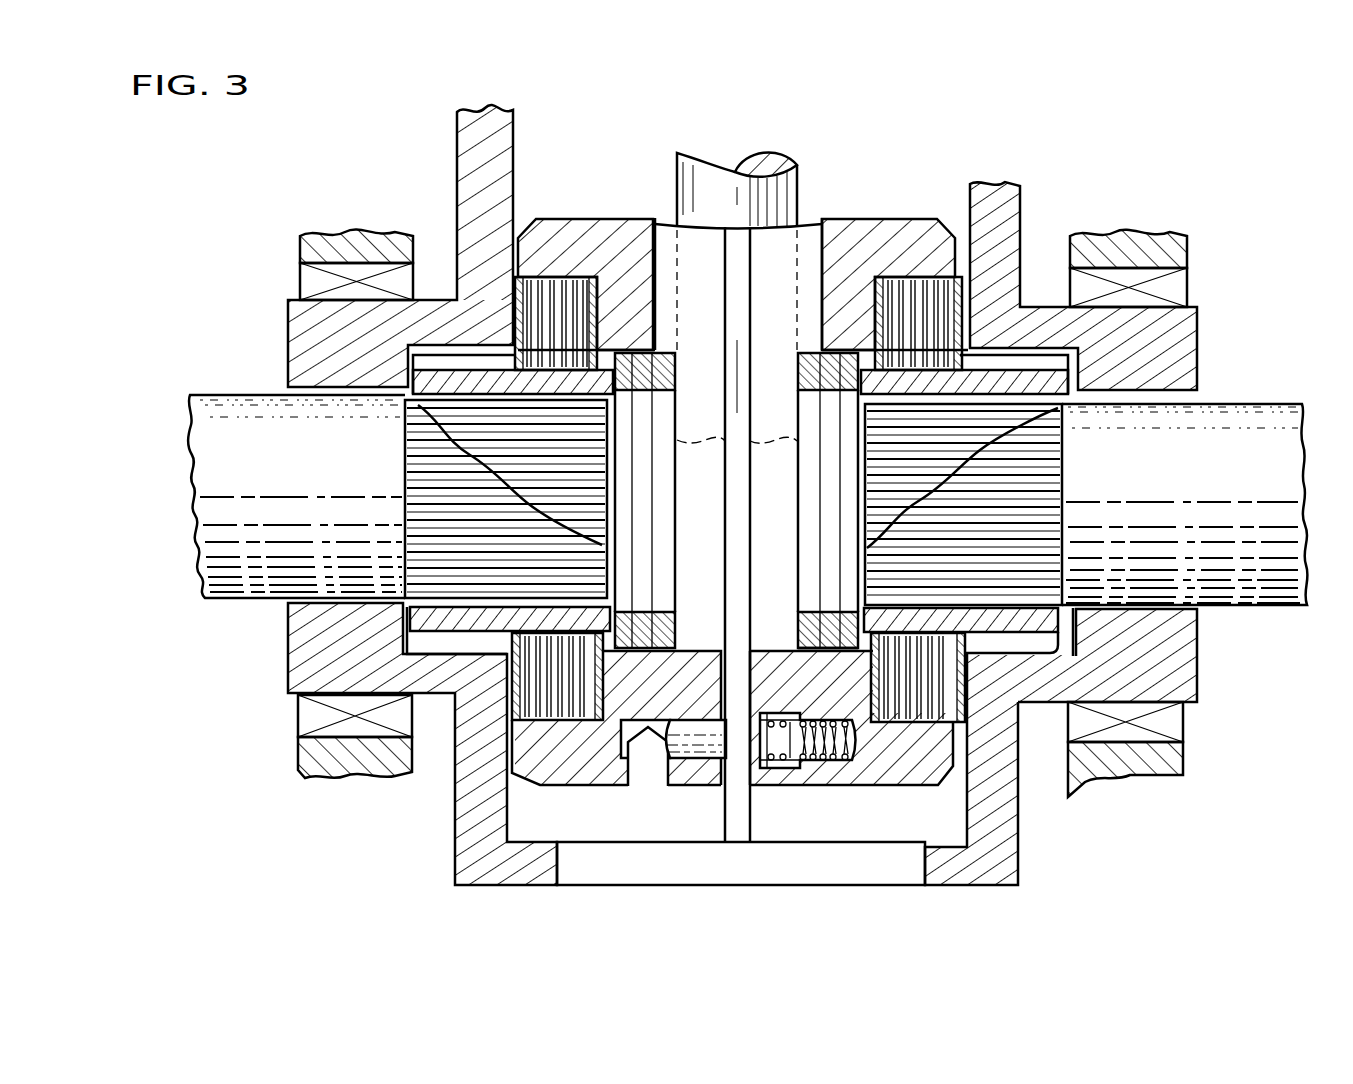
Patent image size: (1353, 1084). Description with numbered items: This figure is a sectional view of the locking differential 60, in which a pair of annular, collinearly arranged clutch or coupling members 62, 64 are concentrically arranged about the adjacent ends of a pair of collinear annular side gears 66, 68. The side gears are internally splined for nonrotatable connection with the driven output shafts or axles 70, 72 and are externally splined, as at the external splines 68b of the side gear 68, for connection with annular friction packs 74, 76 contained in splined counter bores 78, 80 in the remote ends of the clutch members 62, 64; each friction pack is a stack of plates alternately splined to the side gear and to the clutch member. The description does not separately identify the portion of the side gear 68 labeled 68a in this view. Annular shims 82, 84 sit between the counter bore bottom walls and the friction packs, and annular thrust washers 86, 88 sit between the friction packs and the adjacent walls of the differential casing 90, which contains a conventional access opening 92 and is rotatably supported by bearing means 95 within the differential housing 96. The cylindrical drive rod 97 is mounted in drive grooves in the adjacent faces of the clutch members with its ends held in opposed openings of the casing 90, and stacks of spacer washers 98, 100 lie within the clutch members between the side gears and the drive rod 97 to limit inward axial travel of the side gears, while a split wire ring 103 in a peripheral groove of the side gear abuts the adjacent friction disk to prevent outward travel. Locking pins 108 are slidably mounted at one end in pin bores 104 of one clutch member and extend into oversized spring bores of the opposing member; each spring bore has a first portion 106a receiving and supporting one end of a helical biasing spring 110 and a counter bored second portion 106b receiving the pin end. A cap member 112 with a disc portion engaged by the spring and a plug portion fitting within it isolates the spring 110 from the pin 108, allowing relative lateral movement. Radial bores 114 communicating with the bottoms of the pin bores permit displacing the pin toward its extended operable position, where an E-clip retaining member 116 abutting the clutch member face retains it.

The locking differential 60 is at (826, 218).
The clutch member 62 is at (588, 236).
The clutch member 64 is at (862, 218).
The side gear 66 is at (402, 628).
The side gear 68 is at (1072, 629).
The hub flange 68a is at (1027, 590).
The external splines 68b is at (1085, 354).
The driven output shaft 70 is at (272, 572).
The driven output shaft 72 is at (1236, 585).
The friction pack 74 is at (522, 277).
The friction pack 76 is at (913, 284).
The splined counter bore 78 is at (537, 703).
The splined counter bore 80 is at (967, 712).
The annular shim 82 is at (590, 785).
The annular shim 84 is at (865, 652).
The annular thrust washer 86 is at (505, 300).
The annular thrust washer 88 is at (1020, 297).
The differential casing 90 is at (455, 876).
The access opening 92 is at (620, 858).
The bearing means 95 is at (302, 718).
The differential housing 96 is at (360, 765).
The drive rod 97 is at (706, 175).
The stack of spacer washers 98 is at (666, 353).
The stack of spacer washers 100 is at (810, 349).
The split wire ring 103 is at (611, 345).
The pin bore 104 is at (688, 726).
The spring bore first portion 106a is at (858, 750).
The spring bore second portion 106b is at (790, 725).
The locking pin 108 is at (690, 765).
The helical biasing spring 110 is at (826, 775).
The cap member 112 is at (765, 775).
The radial bore 114 is at (630, 770).
The E-clip retaining member 116 is at (728, 785).